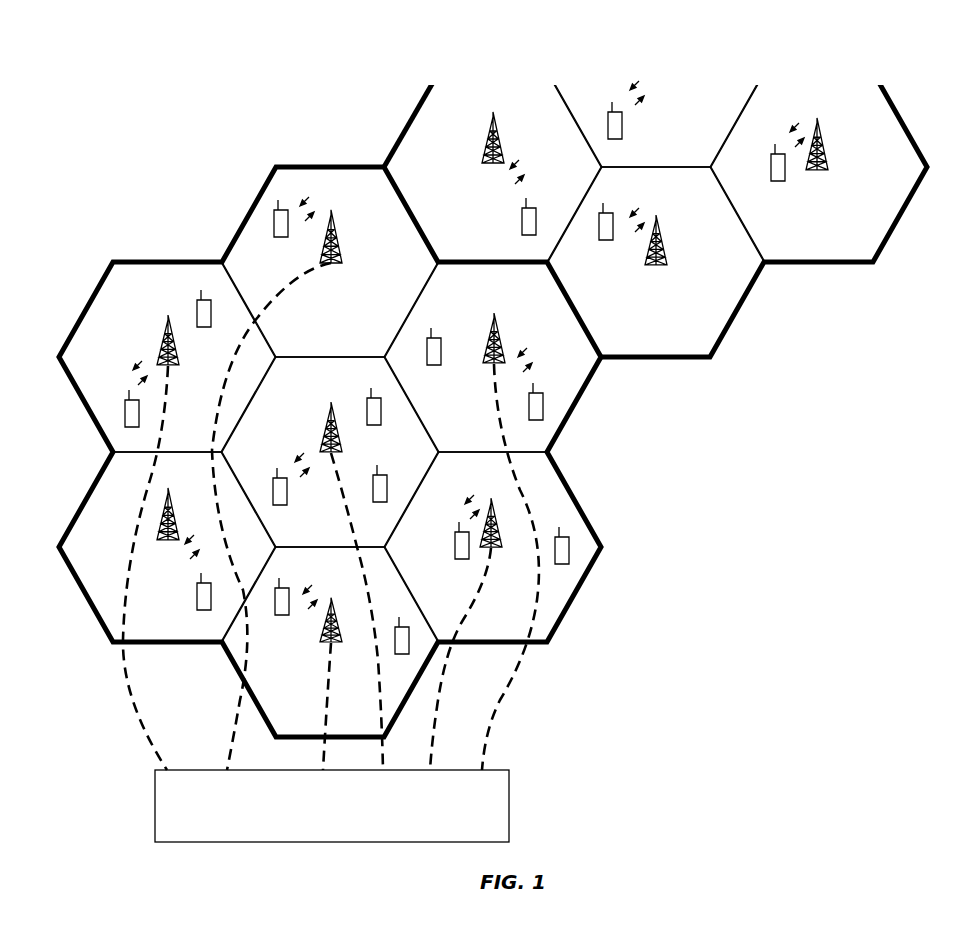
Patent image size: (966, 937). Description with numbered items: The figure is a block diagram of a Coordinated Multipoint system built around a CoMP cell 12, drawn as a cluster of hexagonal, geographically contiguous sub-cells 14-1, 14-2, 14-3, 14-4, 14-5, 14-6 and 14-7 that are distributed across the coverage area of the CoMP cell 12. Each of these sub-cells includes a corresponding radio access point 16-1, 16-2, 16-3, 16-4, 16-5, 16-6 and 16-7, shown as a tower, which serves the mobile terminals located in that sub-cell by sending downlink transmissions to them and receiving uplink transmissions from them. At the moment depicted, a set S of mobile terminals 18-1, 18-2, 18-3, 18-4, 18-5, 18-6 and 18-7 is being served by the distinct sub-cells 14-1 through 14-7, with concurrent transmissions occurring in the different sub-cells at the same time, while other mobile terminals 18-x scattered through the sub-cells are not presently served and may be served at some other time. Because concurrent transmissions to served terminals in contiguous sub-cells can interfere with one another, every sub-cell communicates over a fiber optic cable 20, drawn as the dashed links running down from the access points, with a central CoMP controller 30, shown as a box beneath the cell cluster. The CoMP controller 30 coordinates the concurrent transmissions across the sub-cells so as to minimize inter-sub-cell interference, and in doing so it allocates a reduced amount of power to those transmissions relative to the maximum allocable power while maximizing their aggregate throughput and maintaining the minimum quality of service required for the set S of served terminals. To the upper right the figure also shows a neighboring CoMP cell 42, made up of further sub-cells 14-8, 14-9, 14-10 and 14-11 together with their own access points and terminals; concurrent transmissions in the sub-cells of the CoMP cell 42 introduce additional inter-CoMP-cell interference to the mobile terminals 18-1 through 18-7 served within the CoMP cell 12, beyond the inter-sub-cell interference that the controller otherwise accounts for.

The CoMP cell 12 is at (568, 608).
The sub-cell 14-1 is at (330, 262).
The sub-cell 14-2 is at (167, 357).
The sub-cell 14-3 is at (167, 547).
The sub-cell 14-4 is at (330, 642).
The sub-cell 14-5 is at (493, 547).
The sub-cell 14-6 is at (493, 357).
The sub-cell 14-7 is at (330, 452).
The sub-cell 14-8 is at (493, 167).
The sub-cell 14-9 is at (656, 262).
The sub-cell 14-10 is at (819, 167).
The sub-cell 14-11 is at (656, 83).
The radio access point 16-1 is at (338, 243).
The radio access point 16-2 is at (162, 345).
The radio access point 16-3 is at (160, 527).
The radio access point 16-4 is at (321, 628).
The radio access point 16-5 is at (497, 522).
The radio access point 16-6 is at (500, 335).
The radio access point 16-7 is at (330, 425).
The mobile terminal 18-1 is at (272, 222).
The mobile terminal 18-2 is at (124, 413).
The mobile terminal 18-3 is at (196, 600).
The mobile terminal 18-4 is at (286, 590).
The mobile terminal 18-5 is at (454, 538).
The mobile terminal 18-6 is at (545, 405).
The mobile terminal 18-7 is at (272, 492).
The mobile terminal 18-x is at (198, 312).
The fiber optic cable 20 is at (143, 718).
The CoMP controller 30 is at (321, 832).
The CoMP cell 42 is at (732, 321).